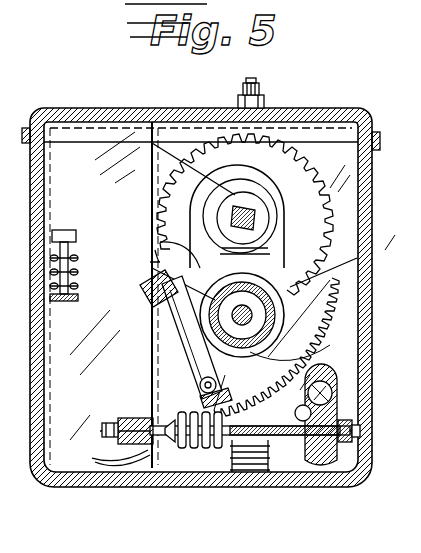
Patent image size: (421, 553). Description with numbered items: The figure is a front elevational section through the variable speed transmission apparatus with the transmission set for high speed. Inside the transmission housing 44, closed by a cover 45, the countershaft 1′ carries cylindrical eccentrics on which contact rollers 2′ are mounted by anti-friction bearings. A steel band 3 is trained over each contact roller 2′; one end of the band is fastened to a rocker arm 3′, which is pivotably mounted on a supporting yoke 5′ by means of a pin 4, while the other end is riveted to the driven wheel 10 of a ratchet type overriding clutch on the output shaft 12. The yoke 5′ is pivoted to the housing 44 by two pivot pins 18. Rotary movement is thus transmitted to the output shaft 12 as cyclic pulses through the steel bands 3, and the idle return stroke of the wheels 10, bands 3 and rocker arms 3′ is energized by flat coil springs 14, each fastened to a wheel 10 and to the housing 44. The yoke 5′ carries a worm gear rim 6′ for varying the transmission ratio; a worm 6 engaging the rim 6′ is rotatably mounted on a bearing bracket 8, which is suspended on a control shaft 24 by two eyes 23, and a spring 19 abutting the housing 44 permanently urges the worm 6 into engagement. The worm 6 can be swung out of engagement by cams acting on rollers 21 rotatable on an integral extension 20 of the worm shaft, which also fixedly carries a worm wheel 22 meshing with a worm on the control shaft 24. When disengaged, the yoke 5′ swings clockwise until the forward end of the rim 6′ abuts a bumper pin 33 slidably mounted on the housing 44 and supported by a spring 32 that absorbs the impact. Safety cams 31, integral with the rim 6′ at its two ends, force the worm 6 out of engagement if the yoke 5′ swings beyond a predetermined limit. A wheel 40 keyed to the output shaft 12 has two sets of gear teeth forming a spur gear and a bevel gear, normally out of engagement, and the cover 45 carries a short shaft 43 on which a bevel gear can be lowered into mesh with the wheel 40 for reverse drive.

The cover 45 is at (113, 110).
The flat coil spring 14 is at (215, 137).
The short shaft 43 is at (256, 85).
The wheel 40 is at (285, 135).
The bumper pin 33 is at (64, 229).
The spring 32 is at (78, 282).
The pivot pin 18 is at (182, 262).
The driven wheel 10 is at (258, 185).
The output shaft 12 is at (262, 212).
The steel band 3 is at (280, 248).
The contact roller 2′ is at (268, 283).
The safety cam 31 is at (335, 282).
The worm gear rim 6′ is at (338, 335).
The countershaft 1′ is at (268, 318).
The rocker arm 3′ is at (190, 352).
The supporting yoke 5′ is at (165, 370).
The pin 4 is at (199, 385).
The integral extension 20 is at (128, 424).
The roller 21 is at (92, 458).
The control shaft 24 is at (338, 378).
The eye 23 is at (352, 403).
The transmission housing 44 is at (110, 487).
The worm 6 is at (182, 470).
The spring 19 is at (245, 470).
The bearing bracket 8 is at (288, 470).
The worm wheel 22 is at (352, 482).